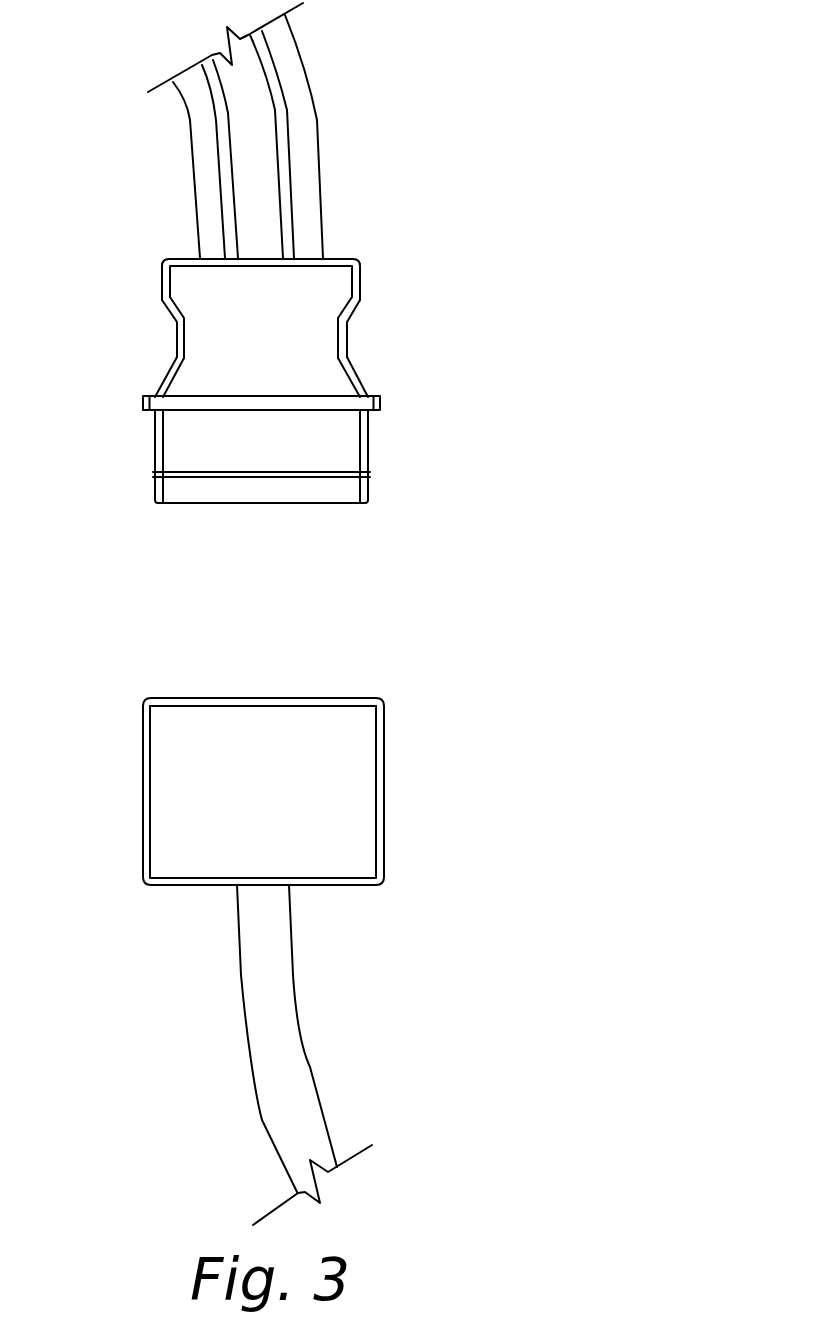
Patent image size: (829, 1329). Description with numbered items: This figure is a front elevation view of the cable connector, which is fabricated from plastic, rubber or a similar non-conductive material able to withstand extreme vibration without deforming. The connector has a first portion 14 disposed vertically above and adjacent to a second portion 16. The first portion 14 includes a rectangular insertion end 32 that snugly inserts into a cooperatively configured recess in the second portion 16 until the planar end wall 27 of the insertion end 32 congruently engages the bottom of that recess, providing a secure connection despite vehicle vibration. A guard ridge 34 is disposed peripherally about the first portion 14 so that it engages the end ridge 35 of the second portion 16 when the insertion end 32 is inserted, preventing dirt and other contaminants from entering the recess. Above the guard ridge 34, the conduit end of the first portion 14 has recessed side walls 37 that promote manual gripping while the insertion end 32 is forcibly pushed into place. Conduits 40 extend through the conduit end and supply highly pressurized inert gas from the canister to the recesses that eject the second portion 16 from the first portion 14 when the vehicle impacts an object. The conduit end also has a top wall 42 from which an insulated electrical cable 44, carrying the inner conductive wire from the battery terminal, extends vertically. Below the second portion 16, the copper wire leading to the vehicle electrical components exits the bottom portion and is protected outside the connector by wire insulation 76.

The first portion 14 is at (332, 300).
The second portion 16 is at (343, 818).
The planar end wall 27 is at (323, 503).
The insertion end 32 is at (347, 448).
The guard ridge 34 is at (382, 397).
The end ridge 35 is at (317, 698).
The recessed side walls 37 is at (167, 315).
The conduits 40 is at (305, 94).
The top wall 42 is at (331, 257).
The insulated electrical cable 44 is at (260, 148).
The wire insulation 76 is at (297, 1078).